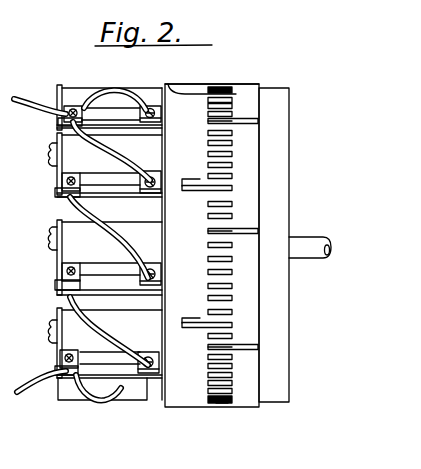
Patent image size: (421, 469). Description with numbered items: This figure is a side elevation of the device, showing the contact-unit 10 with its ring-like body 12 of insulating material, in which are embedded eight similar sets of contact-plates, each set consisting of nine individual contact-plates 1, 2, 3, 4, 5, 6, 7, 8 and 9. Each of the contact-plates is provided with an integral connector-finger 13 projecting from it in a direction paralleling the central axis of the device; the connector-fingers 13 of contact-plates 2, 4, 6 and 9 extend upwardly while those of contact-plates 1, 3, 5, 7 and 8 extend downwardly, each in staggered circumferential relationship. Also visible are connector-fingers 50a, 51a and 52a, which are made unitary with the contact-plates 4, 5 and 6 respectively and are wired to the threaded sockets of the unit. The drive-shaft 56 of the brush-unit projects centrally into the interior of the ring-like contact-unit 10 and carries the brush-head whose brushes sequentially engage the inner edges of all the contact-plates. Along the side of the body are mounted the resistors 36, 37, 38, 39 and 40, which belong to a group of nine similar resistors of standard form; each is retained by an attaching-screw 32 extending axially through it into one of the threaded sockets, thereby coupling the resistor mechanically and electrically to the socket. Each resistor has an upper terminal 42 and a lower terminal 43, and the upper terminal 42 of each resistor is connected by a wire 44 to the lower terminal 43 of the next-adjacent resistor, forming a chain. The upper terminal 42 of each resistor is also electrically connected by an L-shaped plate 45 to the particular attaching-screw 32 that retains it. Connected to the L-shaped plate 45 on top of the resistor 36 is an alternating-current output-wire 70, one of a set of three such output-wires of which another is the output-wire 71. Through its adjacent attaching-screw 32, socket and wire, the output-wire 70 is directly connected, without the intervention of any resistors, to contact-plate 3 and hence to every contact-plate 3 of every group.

The contact-plate 1 is at (232, 143).
The contact-plate 2 is at (225, 100).
The contact-plate 3 is at (231, 90).
The contact-plate 4 is at (232, 91).
The contact-plate 5 is at (232, 100).
The contact-plate 6 is at (232, 106).
The contact-plate 7 is at (232, 114).
The contact-plate 8 is at (208, 121).
The contact-plate 9 is at (232, 133).
The contact-unit 10 is at (195, 86).
The ring-like body 12 is at (260, 88).
The connector-finger 13 is at (258, 121).
The attaching-screw 32 is at (52, 150).
The resistor 36 is at (96, 88).
The resistor 37 is at (100, 173).
The resistor 38 is at (112, 262).
The resistor 39 is at (117, 310).
The resistor 40 is at (137, 399).
The upper terminal 42 is at (72, 105).
The lower terminal 43 is at (148, 107).
The wire 44 is at (113, 89).
The L-shaped plate 45 is at (60, 96).
The connector-finger 50a is at (172, 90).
The connector-finger 51a is at (187, 187).
The connector-finger 52a is at (187, 324).
The drive-shaft 56 is at (306, 237).
The alternating-current output-wire 70 is at (25, 113).
The alternating-current output-wire 71 is at (32, 396).